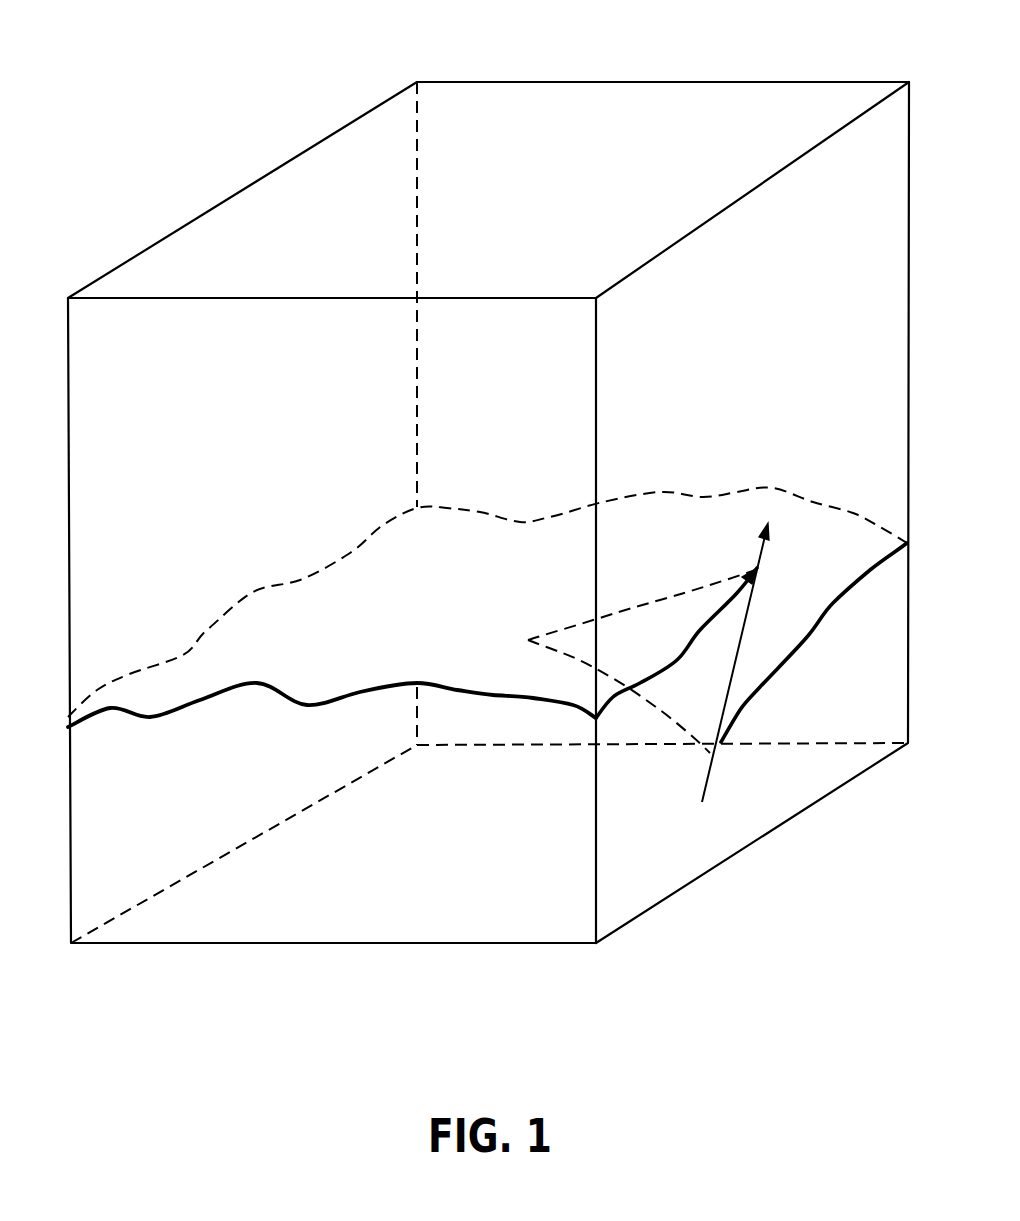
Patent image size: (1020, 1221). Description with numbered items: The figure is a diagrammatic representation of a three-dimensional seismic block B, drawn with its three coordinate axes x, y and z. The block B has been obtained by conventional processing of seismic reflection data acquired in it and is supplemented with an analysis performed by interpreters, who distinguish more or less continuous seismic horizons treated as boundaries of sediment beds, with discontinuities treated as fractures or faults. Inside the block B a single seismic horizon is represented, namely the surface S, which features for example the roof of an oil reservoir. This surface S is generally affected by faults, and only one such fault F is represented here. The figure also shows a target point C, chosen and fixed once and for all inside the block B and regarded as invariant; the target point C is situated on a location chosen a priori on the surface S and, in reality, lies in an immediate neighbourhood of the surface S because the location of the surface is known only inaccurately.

The target point C is at (363, 623).
The fault F is at (735, 662).
The surface S is at (487, 614).
The three-dimensional seismic block B is at (633, 847).
The x axis x is at (596, 298).
The y axis y is at (417, 82).
The z axis z is at (71, 943).